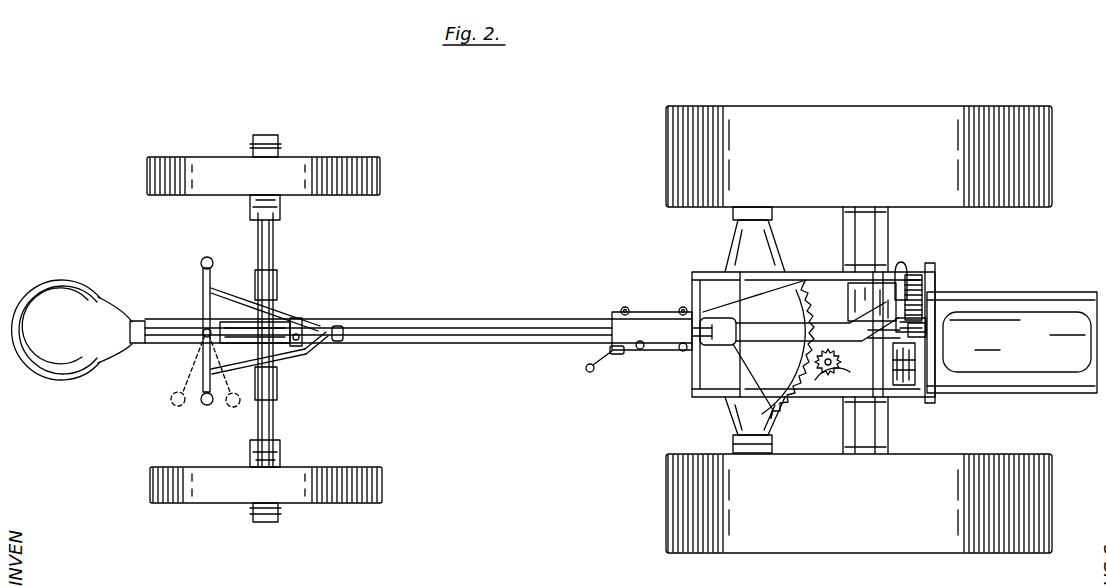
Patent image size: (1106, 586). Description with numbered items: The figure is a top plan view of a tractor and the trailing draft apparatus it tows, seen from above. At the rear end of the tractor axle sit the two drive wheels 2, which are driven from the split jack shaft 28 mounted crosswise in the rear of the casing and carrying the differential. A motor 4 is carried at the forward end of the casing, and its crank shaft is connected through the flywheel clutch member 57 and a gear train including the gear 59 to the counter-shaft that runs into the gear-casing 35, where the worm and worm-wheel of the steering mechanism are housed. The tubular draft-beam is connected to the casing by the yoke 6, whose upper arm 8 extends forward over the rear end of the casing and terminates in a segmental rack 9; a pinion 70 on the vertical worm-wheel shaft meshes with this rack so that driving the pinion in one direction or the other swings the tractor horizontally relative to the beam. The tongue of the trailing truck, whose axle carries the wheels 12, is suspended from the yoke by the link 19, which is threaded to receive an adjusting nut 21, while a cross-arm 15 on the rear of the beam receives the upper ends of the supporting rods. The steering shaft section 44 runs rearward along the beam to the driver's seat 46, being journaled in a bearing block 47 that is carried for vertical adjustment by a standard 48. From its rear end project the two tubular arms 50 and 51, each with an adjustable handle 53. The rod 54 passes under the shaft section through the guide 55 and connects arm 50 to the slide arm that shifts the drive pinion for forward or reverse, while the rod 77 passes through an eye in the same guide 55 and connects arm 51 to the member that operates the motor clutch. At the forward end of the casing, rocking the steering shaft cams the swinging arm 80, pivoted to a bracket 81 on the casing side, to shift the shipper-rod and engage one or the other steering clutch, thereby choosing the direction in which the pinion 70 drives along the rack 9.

The drive wheels 2 is at (859, 329).
The motor 4 is at (1015, 330).
The yoke 6 is at (660, 345).
The upper arm 8 is at (718, 350).
The segmental rack 9 is at (795, 410).
The wheels 12 is at (264, 330).
The cross-arm 15 is at (782, 342).
The link 19 is at (588, 372).
The adjusting nut 21 is at (612, 356).
The split jack shaft 28 is at (752, 455).
The gear-casing 35 is at (832, 283).
The shaft section 44 is at (275, 325).
The driver's seat 46 is at (70, 378).
The bearing block 47 is at (300, 330).
The standard 48 is at (318, 350).
The arm 50 is at (203, 298).
The arm 51 is at (195, 366).
The handle 53 is at (192, 412).
The rod 54 is at (278, 355).
The guide 55 is at (345, 330).
The clutch member 57 is at (907, 385).
The gear 59 is at (922, 312).
The pinion 70 is at (830, 376).
The rod 77 is at (236, 307).
The swinging arm 80 is at (912, 275).
The bracket 81 is at (903, 262).